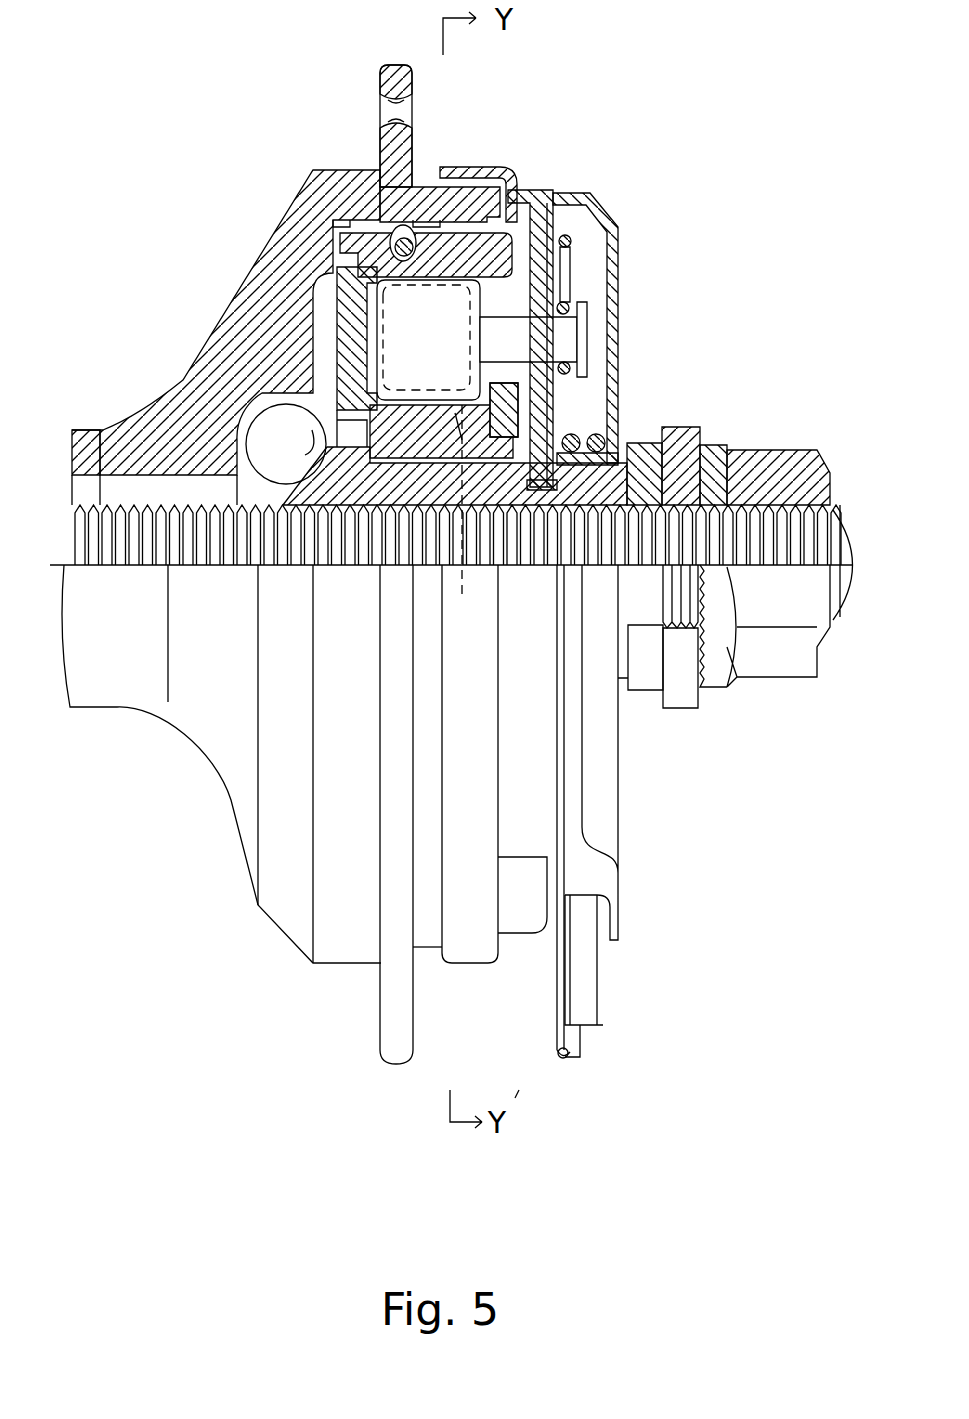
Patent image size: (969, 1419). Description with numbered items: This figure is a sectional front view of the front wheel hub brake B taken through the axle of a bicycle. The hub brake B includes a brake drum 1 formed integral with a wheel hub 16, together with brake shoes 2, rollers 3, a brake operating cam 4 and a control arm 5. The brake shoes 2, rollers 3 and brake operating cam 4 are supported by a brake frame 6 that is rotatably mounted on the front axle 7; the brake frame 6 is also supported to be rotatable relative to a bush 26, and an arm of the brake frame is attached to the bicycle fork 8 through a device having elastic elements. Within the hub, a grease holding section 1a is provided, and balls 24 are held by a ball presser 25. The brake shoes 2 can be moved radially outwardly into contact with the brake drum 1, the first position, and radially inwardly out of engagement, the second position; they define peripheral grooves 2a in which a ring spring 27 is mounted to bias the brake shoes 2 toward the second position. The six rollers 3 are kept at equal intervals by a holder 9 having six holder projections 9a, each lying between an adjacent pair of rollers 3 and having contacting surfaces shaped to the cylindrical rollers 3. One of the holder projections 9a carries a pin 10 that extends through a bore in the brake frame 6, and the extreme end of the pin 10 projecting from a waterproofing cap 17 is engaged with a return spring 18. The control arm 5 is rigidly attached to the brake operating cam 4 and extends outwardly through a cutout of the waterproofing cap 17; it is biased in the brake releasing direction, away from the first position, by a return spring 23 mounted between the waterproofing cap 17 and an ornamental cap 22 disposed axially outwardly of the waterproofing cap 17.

The brake drum 1 is at (400, 146).
The grease holding section 1a is at (385, 157).
The brake shoes 2 is at (503, 240).
The peripheral grooves 2a is at (226, 276).
The rollers 3 is at (390, 328).
The brake operating cam 4 is at (417, 403).
The control arm 5 is at (520, 403).
The brake frame 6 is at (538, 222).
The front axle 7 is at (100, 430).
The bicycle fork 8 is at (690, 427).
The holder 9 is at (330, 303).
The holder projections 9a is at (462, 522).
The pin 10 is at (587, 336).
The wheel hub 16 is at (260, 230).
The waterproofing cap 17 is at (483, 168).
The return spring 18 is at (568, 260).
The ornamental cap 22 is at (618, 285).
The return spring 23 is at (613, 418).
The balls 24 is at (270, 425).
The ball presser 25 is at (354, 566).
The bush 26 is at (545, 567).
The ring spring 27 is at (405, 258).
The front wheel hub brake B is at (596, 509).